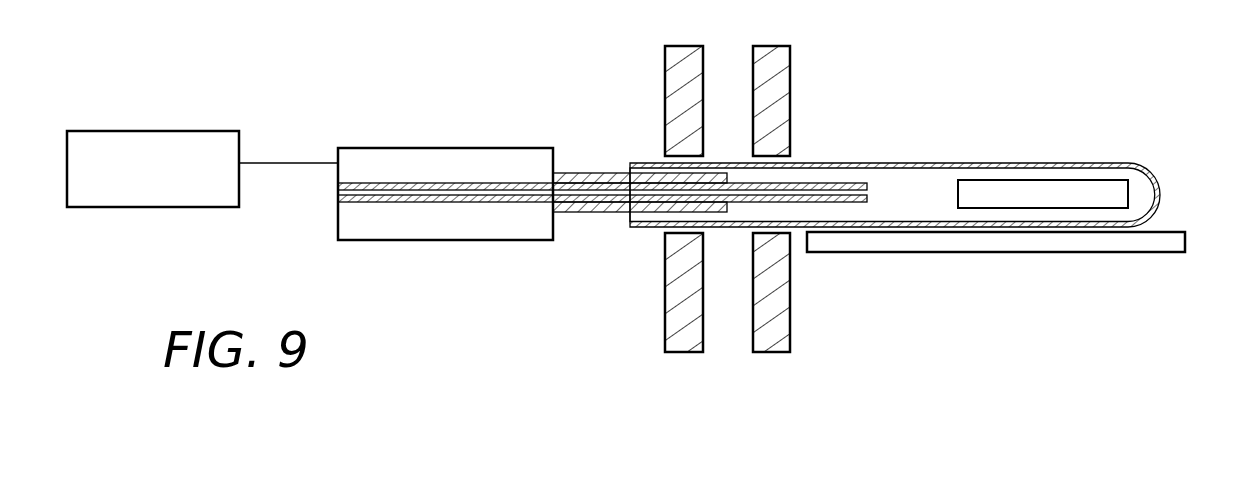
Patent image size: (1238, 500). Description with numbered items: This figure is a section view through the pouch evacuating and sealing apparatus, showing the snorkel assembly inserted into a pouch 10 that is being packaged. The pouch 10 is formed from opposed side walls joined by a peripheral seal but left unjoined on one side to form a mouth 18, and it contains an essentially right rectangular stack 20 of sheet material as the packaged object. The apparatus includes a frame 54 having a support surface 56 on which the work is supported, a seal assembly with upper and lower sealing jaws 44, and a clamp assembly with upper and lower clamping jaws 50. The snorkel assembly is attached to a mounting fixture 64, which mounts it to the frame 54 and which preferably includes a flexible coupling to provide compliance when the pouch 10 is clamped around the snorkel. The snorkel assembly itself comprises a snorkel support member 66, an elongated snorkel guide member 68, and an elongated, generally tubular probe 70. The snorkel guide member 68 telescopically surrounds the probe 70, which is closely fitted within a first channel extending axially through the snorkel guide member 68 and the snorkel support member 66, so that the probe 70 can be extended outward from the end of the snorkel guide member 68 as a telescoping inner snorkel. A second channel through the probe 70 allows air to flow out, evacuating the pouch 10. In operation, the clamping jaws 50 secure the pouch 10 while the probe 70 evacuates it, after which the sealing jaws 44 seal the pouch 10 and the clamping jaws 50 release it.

The pouch 10 is at (1067, 162).
The mouth 18 is at (652, 163).
The stack 20 is at (1117, 187).
The sealing jaws 44 is at (633, 0).
The clamping jaws 50 is at (670, 63).
The frame 54 is at (1116, 253).
The support surface 56 is at (1170, 228).
The mounting fixture 64 is at (177, 207).
The snorkel support member 66 is at (444, 241).
The snorkel guide member 68 is at (604, 214).
The probe 70 is at (866, 184).